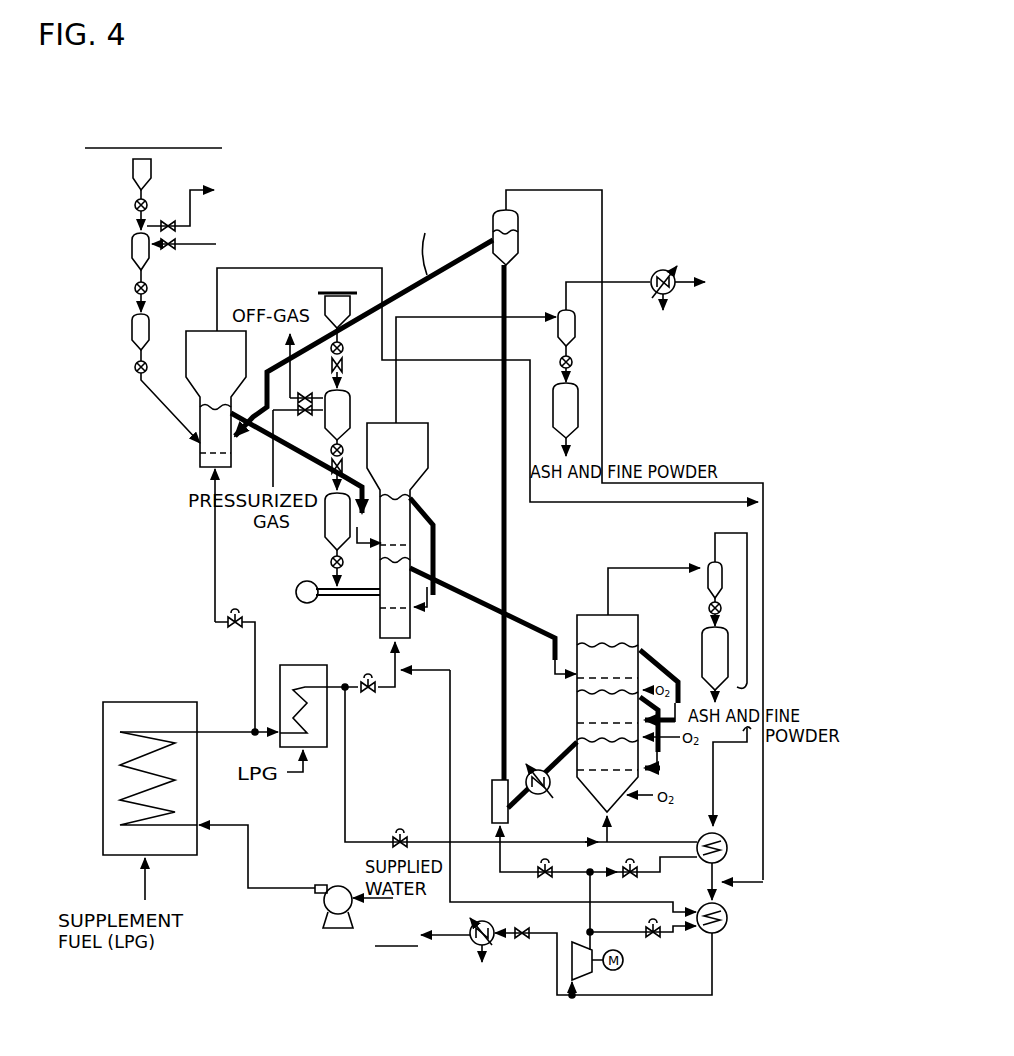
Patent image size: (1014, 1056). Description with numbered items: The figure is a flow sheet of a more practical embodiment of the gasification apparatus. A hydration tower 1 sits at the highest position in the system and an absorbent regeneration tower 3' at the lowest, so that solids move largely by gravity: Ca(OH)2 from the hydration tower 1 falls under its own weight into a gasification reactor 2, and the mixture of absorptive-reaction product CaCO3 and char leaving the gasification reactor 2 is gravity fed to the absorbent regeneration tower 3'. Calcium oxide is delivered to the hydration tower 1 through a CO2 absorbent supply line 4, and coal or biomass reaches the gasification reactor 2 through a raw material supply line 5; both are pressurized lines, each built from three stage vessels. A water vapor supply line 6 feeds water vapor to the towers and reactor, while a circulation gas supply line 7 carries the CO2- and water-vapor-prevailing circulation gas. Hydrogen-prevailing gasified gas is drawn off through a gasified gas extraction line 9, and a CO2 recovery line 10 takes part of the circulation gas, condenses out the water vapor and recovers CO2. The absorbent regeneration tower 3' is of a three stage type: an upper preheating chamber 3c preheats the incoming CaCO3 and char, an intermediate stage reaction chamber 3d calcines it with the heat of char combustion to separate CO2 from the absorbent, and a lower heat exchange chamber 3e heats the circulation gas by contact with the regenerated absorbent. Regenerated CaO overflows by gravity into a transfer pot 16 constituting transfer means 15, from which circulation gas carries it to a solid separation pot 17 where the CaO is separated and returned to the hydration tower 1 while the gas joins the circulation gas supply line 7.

The hydration tower 1 is at (202, 338).
The gasification reactor 2 is at (413, 438).
The absorbent regeneration tower 3' is at (546, 693).
The upper preheating chamber 3c is at (627, 627).
The intermediate stage reaction chamber 3d is at (580, 708).
The lower heat exchange chamber 3e is at (612, 797).
The CO2 absorbent supply line 4 is at (118, 283).
The raw material supply line 5 is at (318, 305).
The water vapor supply line 6 is at (193, 903).
The circulation gas supply line 7 is at (733, 914).
The gasified gas extraction line 9 is at (458, 316).
The CO2 recovery line 10 is at (458, 955).
The transfer means 15 is at (498, 505).
The transfer pot 16 is at (494, 788).
The solid separation pot 17 is at (492, 216).